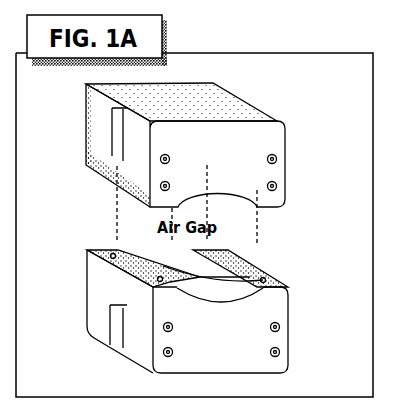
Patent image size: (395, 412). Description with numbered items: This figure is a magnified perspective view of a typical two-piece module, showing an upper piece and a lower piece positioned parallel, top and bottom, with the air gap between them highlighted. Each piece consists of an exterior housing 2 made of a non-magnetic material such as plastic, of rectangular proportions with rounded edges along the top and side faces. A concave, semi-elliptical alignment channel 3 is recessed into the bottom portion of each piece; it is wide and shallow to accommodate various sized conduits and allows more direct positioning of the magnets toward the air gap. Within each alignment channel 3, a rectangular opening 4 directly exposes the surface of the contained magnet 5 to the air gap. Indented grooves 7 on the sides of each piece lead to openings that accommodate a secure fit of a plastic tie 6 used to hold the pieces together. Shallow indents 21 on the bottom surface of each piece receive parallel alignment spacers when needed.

The exterior housing 2 is at (97, 380).
The indented grooves 7 is at (110, 342).
The shallow indents 21 is at (87, 252).
The rectangular opening 4 is at (227, 257).
The magnet 5 is at (245, 278).
The alignment channel 3 is at (247, 292).
The plastic tie 6 is at (130, 271).